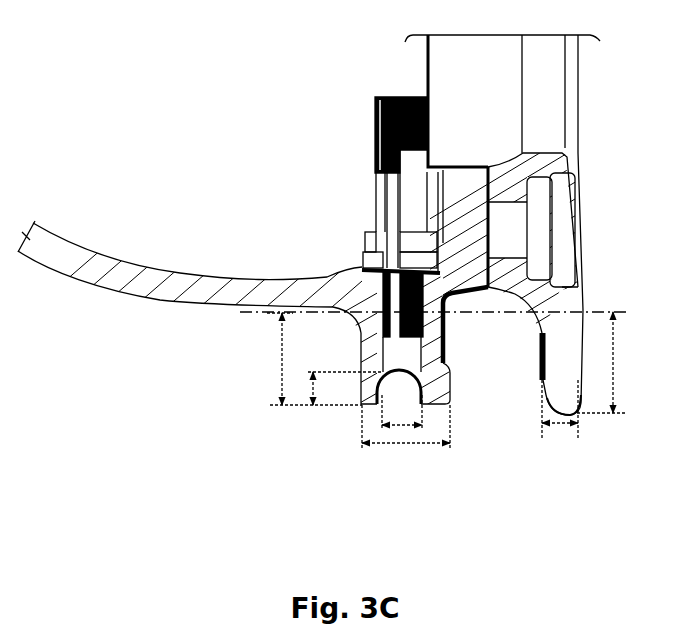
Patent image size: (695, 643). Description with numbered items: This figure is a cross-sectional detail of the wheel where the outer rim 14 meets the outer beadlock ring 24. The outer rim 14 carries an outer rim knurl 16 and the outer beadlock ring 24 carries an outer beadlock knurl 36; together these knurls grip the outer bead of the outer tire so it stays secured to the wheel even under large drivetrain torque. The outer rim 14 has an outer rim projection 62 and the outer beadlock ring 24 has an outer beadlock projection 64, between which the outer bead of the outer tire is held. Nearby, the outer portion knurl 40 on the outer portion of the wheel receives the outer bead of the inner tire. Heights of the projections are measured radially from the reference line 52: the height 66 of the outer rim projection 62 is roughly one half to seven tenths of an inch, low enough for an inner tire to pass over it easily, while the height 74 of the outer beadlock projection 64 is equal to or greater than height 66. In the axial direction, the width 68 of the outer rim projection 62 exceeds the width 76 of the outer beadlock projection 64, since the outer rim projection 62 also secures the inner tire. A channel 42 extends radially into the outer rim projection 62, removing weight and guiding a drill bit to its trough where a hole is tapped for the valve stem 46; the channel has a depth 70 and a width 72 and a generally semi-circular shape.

The outer rim 14 is at (455, 193).
The outer beadlock ring 24 is at (542, 165).
The valve stem 46 is at (378, 202).
The outer portion knurl 40 is at (285, 298).
The channel 42 is at (398, 387).
The reference line 52 is at (598, 312).
The height of the outer rim projection 66 is at (282, 352).
The depth of the channel 70 is at (313, 388).
The outer rim projection 62 is at (362, 407).
The width of the outer rim projection 68 is at (380, 446).
The width of the channel 72 is at (402, 425).
The outer rim knurl 16 is at (453, 365).
The outer beadlock knurl 36 is at (540, 353).
The width of the outer beadlock projection 76 is at (562, 427).
The outer beadlock projection 64 is at (578, 413).
The height of the outer beadlock projection 74 is at (617, 357).